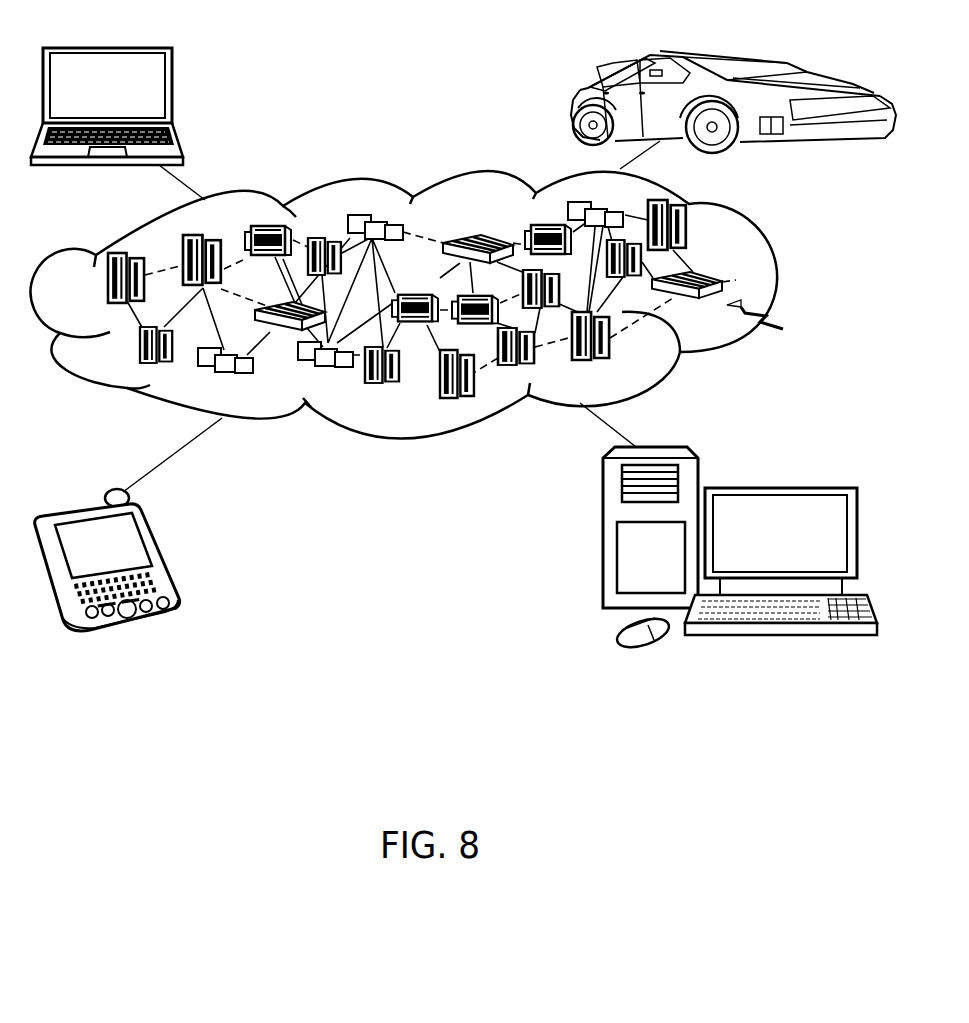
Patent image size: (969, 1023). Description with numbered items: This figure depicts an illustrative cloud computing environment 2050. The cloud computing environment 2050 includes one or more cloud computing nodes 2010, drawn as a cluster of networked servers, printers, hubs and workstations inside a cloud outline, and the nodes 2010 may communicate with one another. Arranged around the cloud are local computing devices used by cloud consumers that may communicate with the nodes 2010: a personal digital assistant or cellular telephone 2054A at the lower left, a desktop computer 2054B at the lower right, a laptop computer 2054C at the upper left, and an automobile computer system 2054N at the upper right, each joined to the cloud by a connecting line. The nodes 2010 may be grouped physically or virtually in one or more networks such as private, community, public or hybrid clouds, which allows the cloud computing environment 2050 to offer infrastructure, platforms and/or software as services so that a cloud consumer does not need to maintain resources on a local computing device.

The laptop computer 2054C is at (172, 92).
The automobile computer system 2054N is at (573, 103).
The cloud computing environment 2050 is at (778, 285).
The cloud computing nodes 2010 is at (781, 322).
The personal digital assistant (PDA) or cellular telephone 2054A is at (163, 556).
The desktop computer 2054B is at (788, 473).